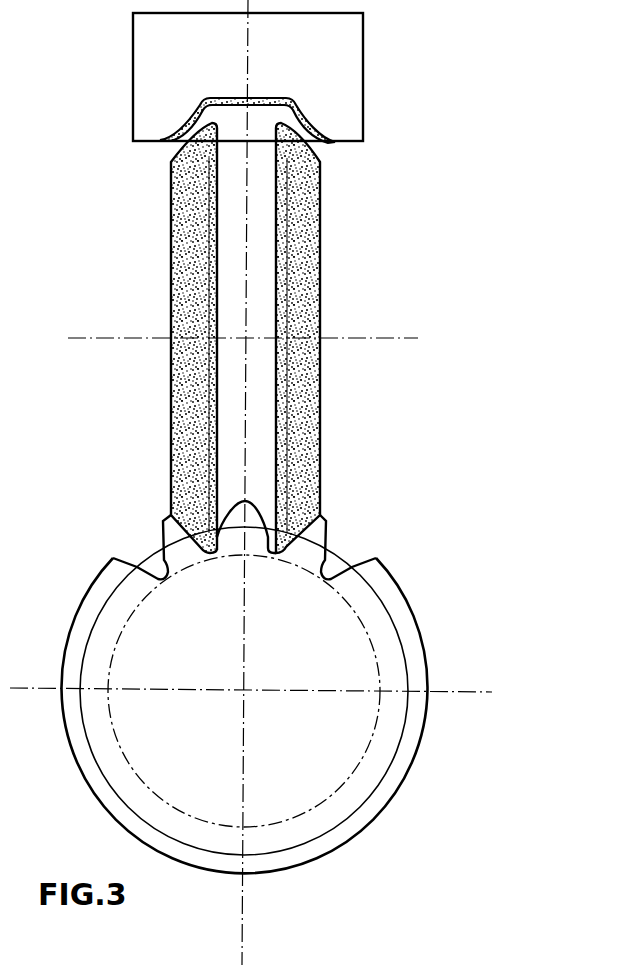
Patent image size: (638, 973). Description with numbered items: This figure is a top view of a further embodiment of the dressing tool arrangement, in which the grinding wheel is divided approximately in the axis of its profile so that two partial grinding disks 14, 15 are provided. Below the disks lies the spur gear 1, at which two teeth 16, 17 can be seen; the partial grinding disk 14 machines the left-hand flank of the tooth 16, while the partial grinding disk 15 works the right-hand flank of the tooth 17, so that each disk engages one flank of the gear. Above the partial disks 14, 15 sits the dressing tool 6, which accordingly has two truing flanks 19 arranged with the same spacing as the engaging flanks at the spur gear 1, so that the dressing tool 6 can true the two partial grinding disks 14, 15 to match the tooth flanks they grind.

The spur gear 1 is at (408, 600).
The dressing tool 6 is at (363, 69).
The partial grinding disk 14 is at (307, 278).
The partial grinding disk 15 is at (197, 225).
The tooth 16 is at (327, 538).
The tooth 17 is at (170, 533).
The truing flank 19 is at (191, 122).